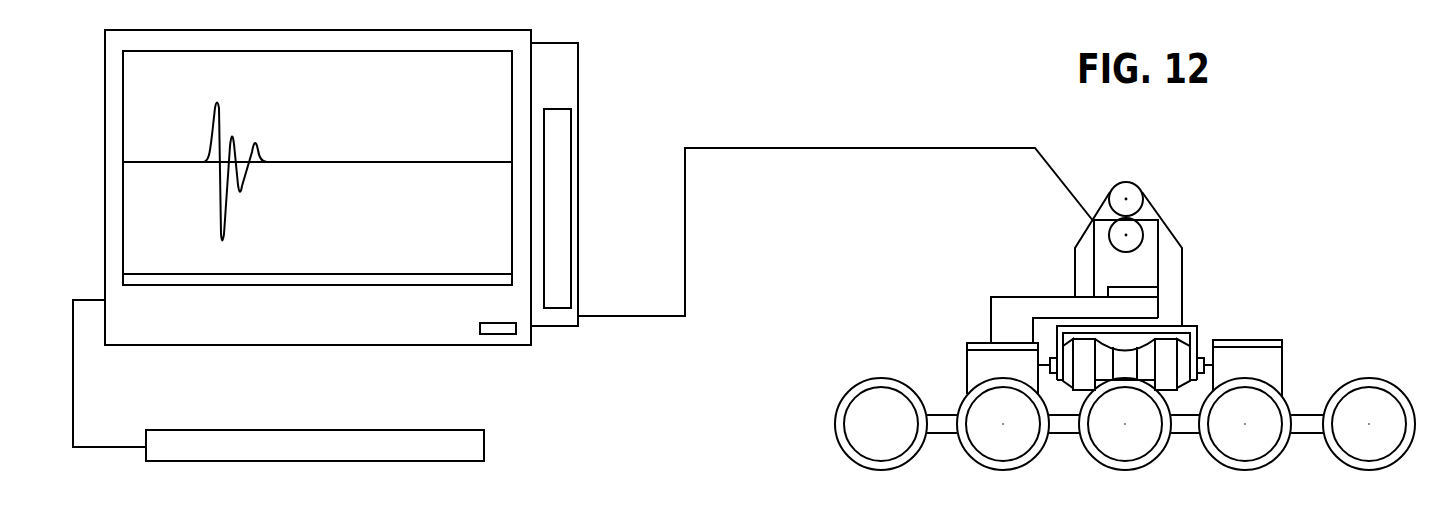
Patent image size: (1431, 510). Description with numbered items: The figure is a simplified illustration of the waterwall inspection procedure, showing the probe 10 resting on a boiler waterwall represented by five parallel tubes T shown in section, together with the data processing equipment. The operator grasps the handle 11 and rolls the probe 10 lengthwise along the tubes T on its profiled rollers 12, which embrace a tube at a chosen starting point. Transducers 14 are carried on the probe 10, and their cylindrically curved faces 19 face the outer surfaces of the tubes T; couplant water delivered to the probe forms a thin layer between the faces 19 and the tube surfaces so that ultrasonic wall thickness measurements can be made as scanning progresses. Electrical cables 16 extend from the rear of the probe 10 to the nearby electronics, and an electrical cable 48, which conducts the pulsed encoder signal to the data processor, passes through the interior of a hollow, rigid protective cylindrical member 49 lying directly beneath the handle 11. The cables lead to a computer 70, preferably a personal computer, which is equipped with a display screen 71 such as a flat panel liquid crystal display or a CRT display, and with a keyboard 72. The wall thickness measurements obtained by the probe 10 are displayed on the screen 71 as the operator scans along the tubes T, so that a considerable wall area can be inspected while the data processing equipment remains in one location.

The probe assembly 10 is at (1064, 277).
The handle 11 is at (1143, 188).
The profiled rollers 12 is at (1185, 353).
The transducers 14 is at (967, 345).
The electrical cables 16 is at (836, 209).
The cylindrically curved faces 19 is at (977, 388).
The electrical cable 48 is at (890, 148).
The protective cylindrical member 49 is at (1145, 232).
The computer 70 is at (427, 345).
The display screen 71 is at (397, 119).
The keyboard 72 is at (455, 431).
The tubes T is at (973, 463).